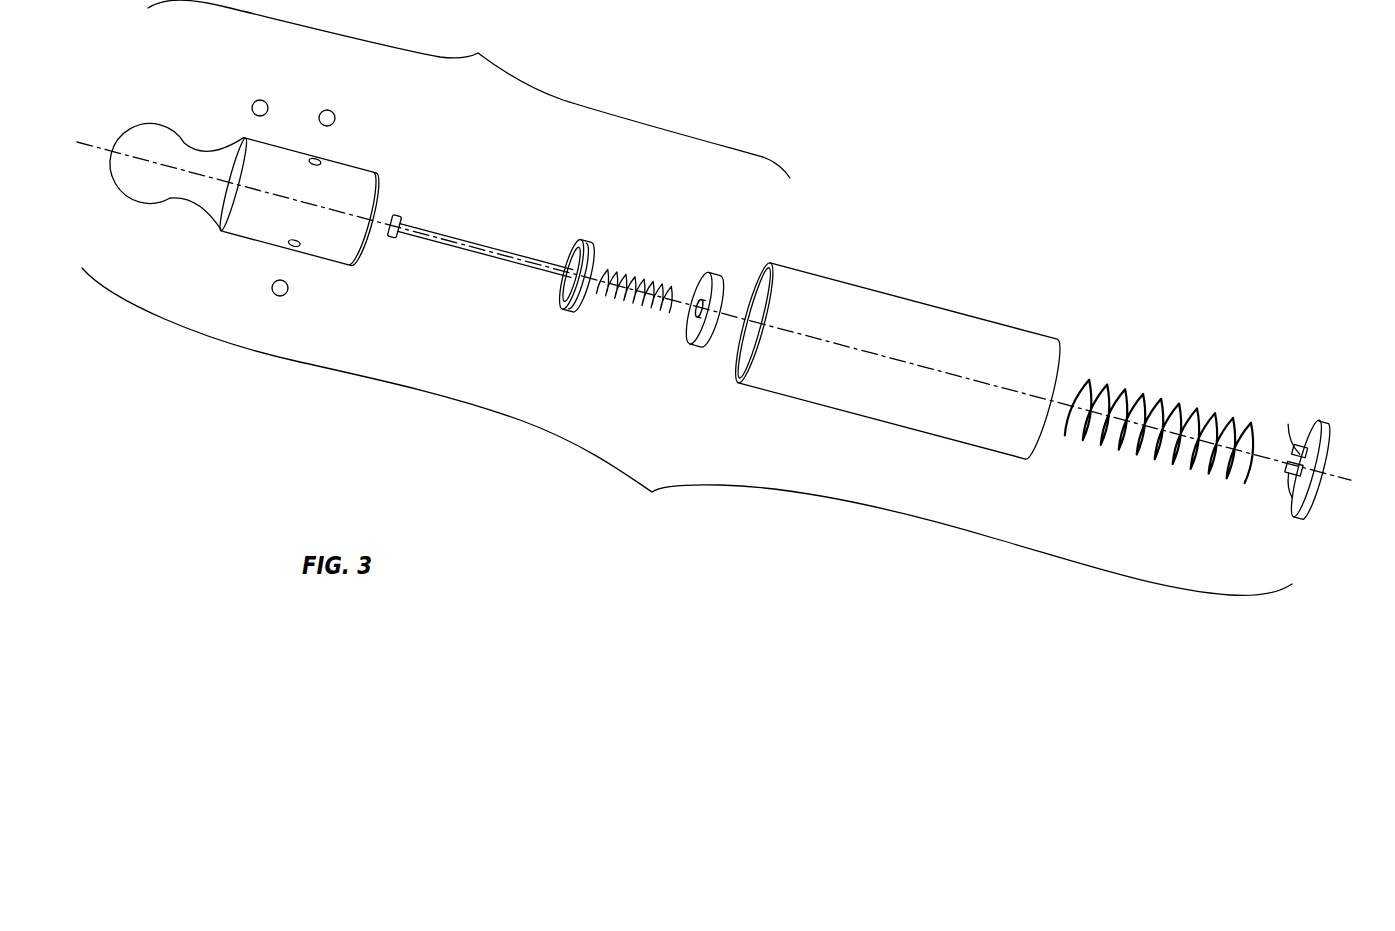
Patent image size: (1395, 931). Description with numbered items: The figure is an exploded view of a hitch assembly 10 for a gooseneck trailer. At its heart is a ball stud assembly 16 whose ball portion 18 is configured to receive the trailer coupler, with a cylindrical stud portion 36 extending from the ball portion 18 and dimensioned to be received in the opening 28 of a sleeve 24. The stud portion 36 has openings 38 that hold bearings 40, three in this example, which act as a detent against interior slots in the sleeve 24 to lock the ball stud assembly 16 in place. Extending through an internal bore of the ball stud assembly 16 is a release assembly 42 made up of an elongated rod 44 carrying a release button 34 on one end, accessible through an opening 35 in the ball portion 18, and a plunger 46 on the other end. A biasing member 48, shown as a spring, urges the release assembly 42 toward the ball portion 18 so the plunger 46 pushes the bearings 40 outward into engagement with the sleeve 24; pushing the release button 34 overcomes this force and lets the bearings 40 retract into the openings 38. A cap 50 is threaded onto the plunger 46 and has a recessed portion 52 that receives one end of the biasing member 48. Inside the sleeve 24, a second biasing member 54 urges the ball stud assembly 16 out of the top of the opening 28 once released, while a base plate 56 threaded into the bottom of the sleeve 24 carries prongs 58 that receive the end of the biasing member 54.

The hitch assembly 10 is at (687, 431).
The ball stud assembly 16 is at (469, 89).
The ball portion 18 is at (142, 132).
The sleeve 24 is at (948, 317).
The opening 28 is at (763, 290).
The release button 34 is at (386, 232).
The opening 35 is at (122, 158).
The cylindrical stud portion 36 is at (367, 187).
The openings 38 is at (314, 158).
The bearings 40 is at (252, 110).
The release assembly 42 is at (481, 279).
The elongated rod 44 is at (473, 252).
The plunger 46 is at (560, 310).
The biasing member 48 is at (633, 300).
The cap 50 is at (697, 348).
The recessed portion 52 is at (700, 303).
The biasing member 54 is at (1177, 402).
The base plate 56 is at (1323, 420).
The prongs 58 is at (1278, 433).